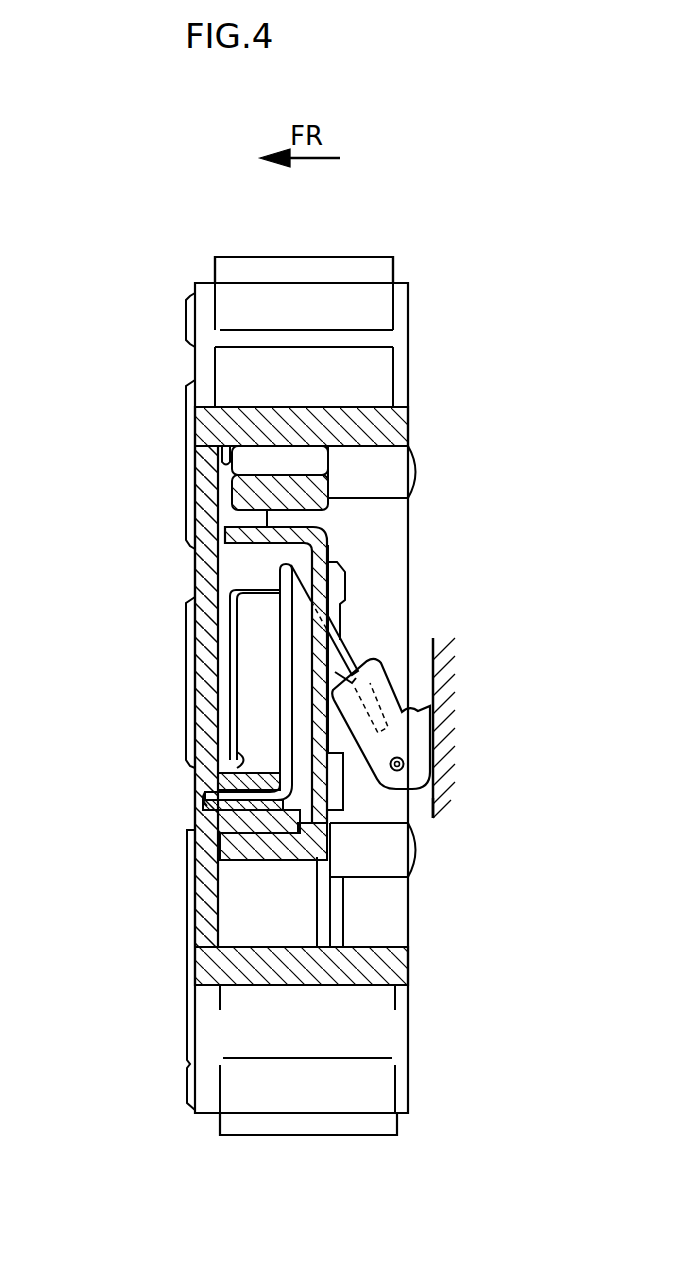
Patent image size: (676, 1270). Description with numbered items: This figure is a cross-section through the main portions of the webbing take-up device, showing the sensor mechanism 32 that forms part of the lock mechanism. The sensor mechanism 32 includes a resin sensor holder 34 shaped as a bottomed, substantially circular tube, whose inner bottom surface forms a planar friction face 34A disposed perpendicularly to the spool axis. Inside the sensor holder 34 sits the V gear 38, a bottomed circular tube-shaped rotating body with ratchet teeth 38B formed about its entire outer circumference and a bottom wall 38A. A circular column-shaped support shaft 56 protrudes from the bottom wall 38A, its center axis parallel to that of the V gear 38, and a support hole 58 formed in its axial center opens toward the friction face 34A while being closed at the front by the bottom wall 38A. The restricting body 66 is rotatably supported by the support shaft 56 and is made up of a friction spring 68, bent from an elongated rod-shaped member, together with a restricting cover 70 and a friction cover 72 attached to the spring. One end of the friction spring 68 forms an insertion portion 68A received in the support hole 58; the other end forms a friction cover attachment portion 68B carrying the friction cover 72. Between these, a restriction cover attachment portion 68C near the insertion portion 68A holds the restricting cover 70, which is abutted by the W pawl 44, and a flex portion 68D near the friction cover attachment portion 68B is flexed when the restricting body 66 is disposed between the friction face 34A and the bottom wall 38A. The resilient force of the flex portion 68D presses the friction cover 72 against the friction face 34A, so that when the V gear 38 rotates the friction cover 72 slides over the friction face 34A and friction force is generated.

The sensor mechanism 32 is at (146, 193).
The V gear 38 is at (193, 283).
The ratchet teeth 38B is at (321, 257).
The bottom wall 38A is at (215, 555).
The W pawl 44 is at (332, 462).
The restricting cover 70 is at (228, 512).
The restricting body 66 is at (341, 545).
The friction spring 68 is at (282, 635).
The insertion portion 68A is at (247, 800).
The friction cover attachment portion 68B is at (400, 687).
The restriction cover attachment portion 68C is at (236, 674).
The flex portion 68D is at (346, 675).
The friction cover 72 is at (433, 697).
The sensor holder 34 is at (432, 647).
The friction face 34A is at (433, 818).
The support shaft 56 is at (240, 748).
The support hole 58 is at (215, 797).